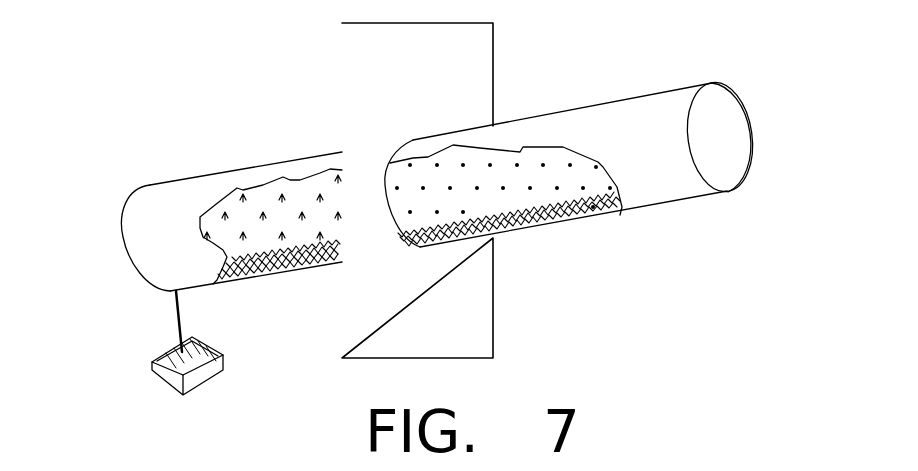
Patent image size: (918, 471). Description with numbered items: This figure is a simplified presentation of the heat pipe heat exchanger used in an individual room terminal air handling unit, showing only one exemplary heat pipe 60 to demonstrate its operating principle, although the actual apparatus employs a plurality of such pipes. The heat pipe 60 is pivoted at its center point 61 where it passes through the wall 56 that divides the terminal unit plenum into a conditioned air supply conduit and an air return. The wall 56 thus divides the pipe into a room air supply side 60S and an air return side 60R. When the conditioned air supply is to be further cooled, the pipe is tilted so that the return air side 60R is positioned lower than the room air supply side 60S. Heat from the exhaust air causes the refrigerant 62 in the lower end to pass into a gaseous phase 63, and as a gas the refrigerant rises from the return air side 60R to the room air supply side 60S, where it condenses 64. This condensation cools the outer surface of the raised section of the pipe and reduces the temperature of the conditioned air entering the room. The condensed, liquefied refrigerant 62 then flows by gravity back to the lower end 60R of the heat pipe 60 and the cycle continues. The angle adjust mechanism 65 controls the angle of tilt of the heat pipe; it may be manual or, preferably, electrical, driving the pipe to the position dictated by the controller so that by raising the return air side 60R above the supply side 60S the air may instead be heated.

The wall 56 is at (343, 53).
The heat pipe 60 is at (735, 149).
The air return side 60R is at (142, 192).
The room air supply side 60S is at (740, 95).
The center point 61 is at (418, 247).
The refrigerant 62 is at (263, 268).
The gaseous phase 63 is at (263, 215).
The condensed refrigerant 64 is at (502, 188).
The angle adjust mechanism 65 is at (152, 360).